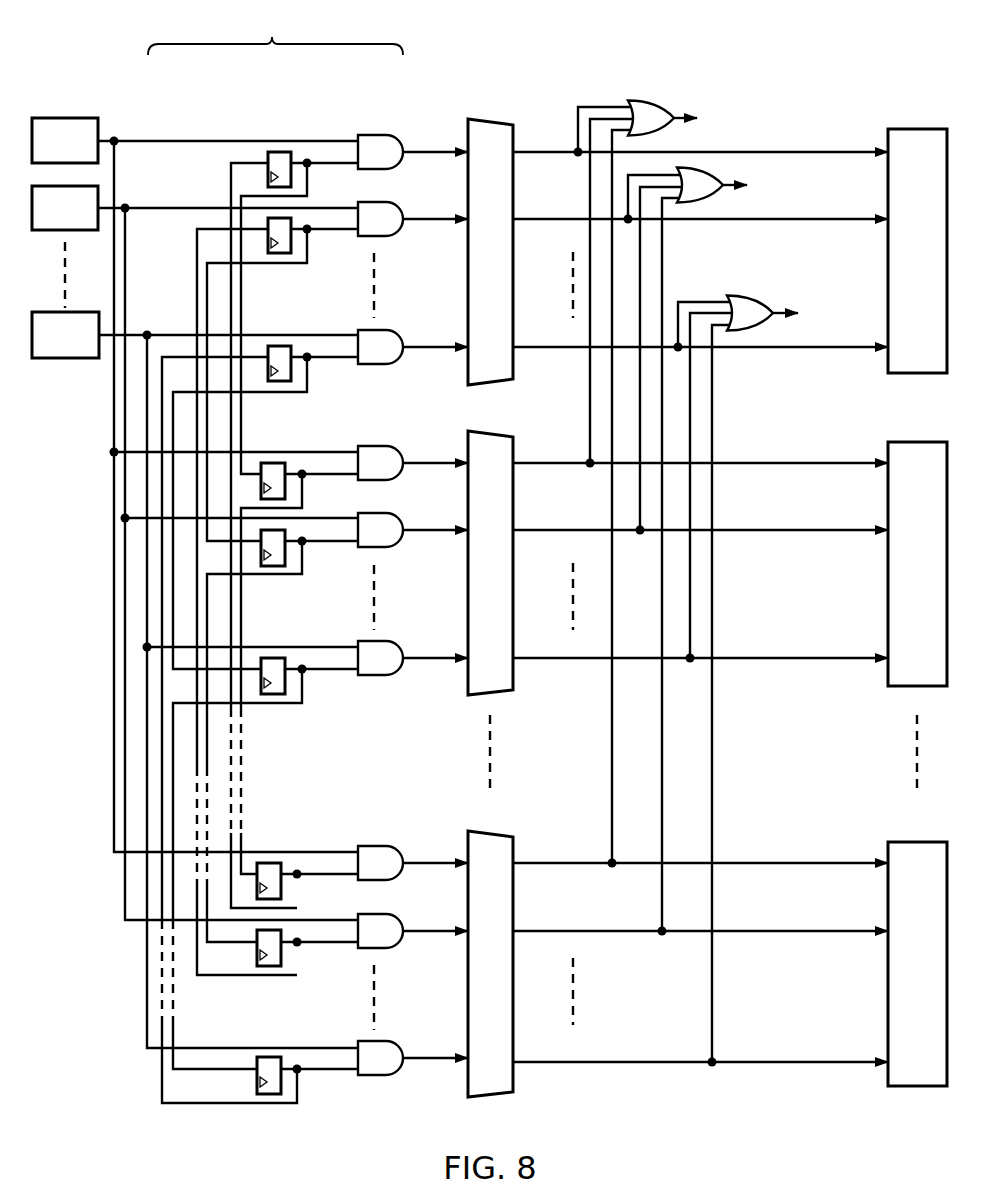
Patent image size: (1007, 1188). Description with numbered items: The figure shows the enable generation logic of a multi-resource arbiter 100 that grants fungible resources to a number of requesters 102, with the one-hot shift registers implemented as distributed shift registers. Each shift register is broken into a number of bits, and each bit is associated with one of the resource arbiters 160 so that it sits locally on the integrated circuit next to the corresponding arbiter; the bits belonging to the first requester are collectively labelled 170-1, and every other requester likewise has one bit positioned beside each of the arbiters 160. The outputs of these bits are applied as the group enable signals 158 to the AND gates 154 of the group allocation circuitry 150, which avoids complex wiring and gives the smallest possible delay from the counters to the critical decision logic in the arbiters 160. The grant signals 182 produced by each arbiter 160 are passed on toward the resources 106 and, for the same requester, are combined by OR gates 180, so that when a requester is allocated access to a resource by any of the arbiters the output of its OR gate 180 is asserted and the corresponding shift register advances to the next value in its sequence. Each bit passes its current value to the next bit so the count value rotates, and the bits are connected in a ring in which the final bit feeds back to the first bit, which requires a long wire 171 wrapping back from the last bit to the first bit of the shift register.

The arbiter 100 is at (114, 1110).
The requesters 102 is at (60, 126).
The resources 106 is at (901, 149).
The group allocation circuitry 150 is at (275, 535).
The AND gate 154 is at (382, 137).
The group enable signals 158 is at (316, 166).
The resource arbiters 160 is at (498, 128).
The shift register bits corresponding to requester 1 170-1 is at (277, 163).
The long wire 171 is at (162, 578).
The OR gates 180 is at (655, 112).
The grant signals 182 is at (523, 155).